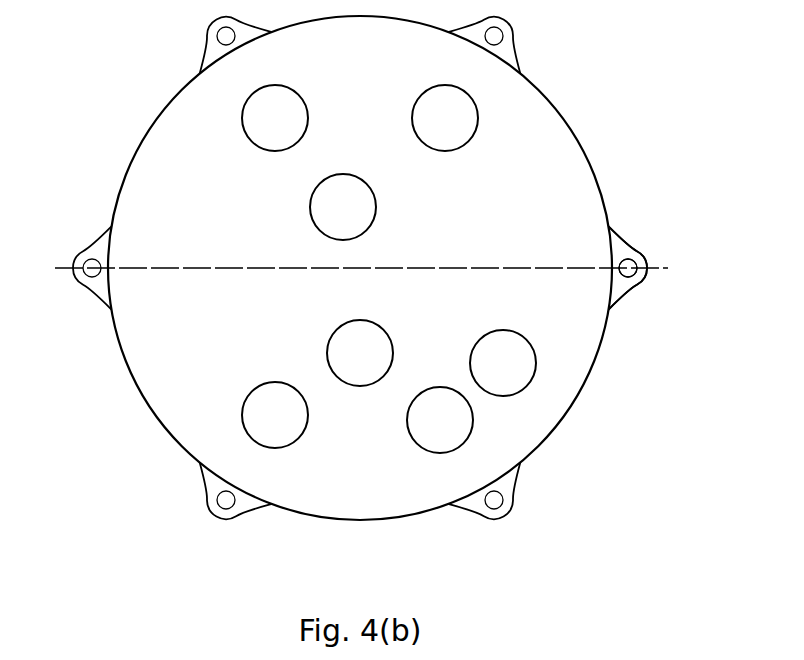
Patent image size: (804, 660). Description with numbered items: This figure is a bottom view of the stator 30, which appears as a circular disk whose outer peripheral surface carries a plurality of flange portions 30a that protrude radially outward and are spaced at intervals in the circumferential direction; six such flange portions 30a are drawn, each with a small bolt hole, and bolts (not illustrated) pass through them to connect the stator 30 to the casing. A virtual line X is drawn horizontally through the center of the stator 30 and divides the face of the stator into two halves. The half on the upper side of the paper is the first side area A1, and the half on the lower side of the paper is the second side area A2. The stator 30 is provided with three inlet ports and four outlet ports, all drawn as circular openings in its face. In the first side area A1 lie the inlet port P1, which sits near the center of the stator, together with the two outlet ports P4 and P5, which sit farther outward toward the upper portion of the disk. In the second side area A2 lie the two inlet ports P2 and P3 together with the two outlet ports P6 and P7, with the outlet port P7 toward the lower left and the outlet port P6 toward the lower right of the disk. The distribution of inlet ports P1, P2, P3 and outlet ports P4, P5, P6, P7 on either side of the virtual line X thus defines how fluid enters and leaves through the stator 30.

The stator 30 is at (574, 94).
The flange portion 30a is at (622, 248).
The virtual line X is at (349, 269).
The first side area A1 is at (172, 213).
The second side area A2 is at (160, 326).
The inlet port P1 is at (312, 205).
The inlet port P2 is at (448, 451).
The inlet port P3 is at (364, 384).
The outlet port P4 is at (242, 120).
The outlet port P5 is at (478, 114).
The outlet port P6 is at (530, 376).
The outlet port P7 is at (243, 425).